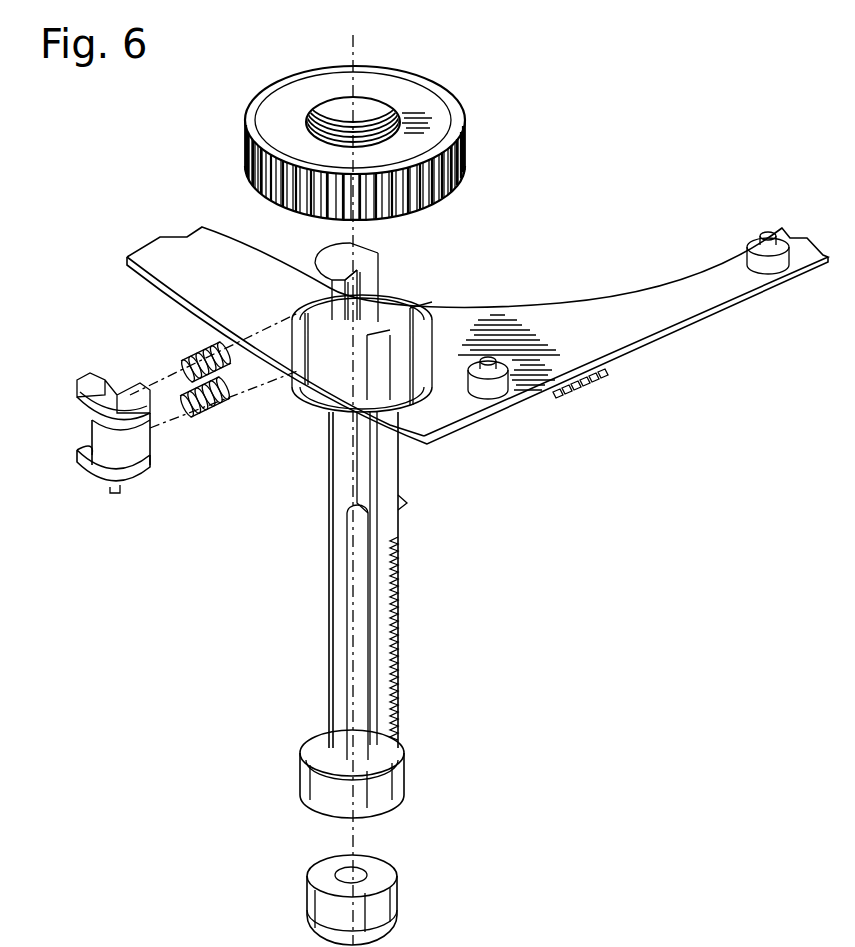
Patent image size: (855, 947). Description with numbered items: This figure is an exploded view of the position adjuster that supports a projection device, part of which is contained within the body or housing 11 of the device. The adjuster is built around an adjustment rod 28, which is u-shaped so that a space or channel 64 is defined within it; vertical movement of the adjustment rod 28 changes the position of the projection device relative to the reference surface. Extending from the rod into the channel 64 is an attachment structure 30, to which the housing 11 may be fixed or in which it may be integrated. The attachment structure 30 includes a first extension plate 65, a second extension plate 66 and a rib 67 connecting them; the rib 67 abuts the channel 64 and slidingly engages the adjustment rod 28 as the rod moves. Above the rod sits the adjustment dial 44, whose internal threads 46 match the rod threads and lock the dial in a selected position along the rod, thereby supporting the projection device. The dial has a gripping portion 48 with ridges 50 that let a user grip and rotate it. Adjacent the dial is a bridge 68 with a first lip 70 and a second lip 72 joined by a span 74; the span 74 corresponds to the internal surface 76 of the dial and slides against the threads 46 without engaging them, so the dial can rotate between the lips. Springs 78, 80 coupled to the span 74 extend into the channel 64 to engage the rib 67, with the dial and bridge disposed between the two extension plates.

The housing 11 is at (720, 317).
The adjustment rod 28 is at (369, 522).
The attachment structure 30 is at (361, 274).
The adjustment dial 44 is at (381, 139).
The internal threads 46 is at (346, 97).
The gripping portion 48 is at (466, 155).
The ridges 50 is at (430, 190).
The channel 64 is at (342, 482).
The first extension plate 65 is at (328, 260).
The second extension plate 66 is at (365, 365).
The rib 67 is at (383, 312).
The bridge 68 is at (110, 446).
The first lip 70 is at (83, 403).
The second lip 72 is at (97, 477).
The span 74 is at (153, 448).
The internal surface 76 is at (327, 115).
The spring 78 is at (198, 357).
The spring 80 is at (203, 412).